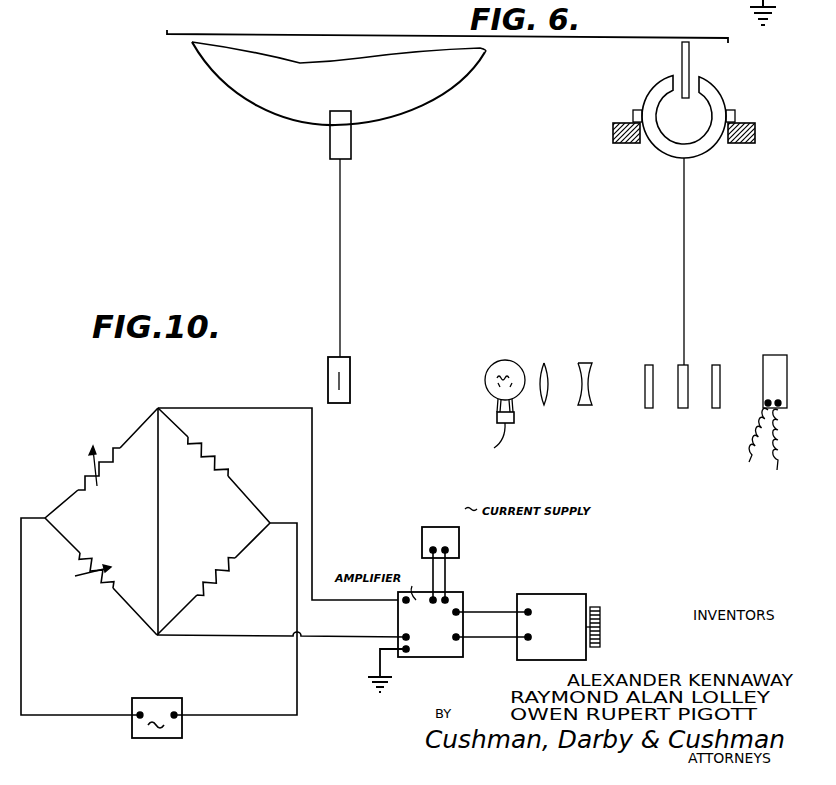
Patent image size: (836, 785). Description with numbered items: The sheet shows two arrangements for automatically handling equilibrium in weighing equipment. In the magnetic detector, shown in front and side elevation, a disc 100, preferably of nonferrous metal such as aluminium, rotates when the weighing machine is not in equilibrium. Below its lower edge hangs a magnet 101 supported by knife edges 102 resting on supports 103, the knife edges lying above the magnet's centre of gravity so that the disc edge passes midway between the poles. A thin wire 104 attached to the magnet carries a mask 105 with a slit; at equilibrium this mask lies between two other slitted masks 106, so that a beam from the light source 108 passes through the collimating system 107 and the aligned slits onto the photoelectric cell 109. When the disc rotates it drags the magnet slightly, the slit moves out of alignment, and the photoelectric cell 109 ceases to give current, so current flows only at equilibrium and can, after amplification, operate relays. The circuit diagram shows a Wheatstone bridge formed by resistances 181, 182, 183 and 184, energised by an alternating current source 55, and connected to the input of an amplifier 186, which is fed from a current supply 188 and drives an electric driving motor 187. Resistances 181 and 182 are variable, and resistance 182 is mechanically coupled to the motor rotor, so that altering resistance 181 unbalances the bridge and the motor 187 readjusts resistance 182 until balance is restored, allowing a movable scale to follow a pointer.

In FIG. 6, the disc 100 is at (464, 78).
In FIG. 6, the magnet 101 is at (351, 152).
In FIG. 6, the knife edges 102 is at (338, 136).
In FIG. 6, the supports 103 is at (631, 143).
In FIG. 6, the thin wire 104 is at (339, 305).
In FIG. 6, the mask 105 is at (328, 383).
In FIG. 6, the masks 106 is at (693, 431).
In FIG. 6, the collimating system 107 is at (559, 377).
In FIG. 6, the light source 108 is at (504, 361).
In FIG. 6, the photoelectric cell 109 is at (767, 360).
In FIG. 10, the variable resistance 181 is at (86, 464).
In FIG. 10, the variable resistance 182 is at (93, 581).
In FIG. 10, the resistance 183 is at (222, 585).
In FIG. 10, the resistance 184 is at (229, 471).
In FIG. 10, the AC source 55 is at (172, 688).
In FIG. 10, the amplifier 186 is at (445, 652).
In FIG. 10, the electric driving motor 187 is at (522, 652).
In FIG. 10, the source of current 188 is at (462, 512).